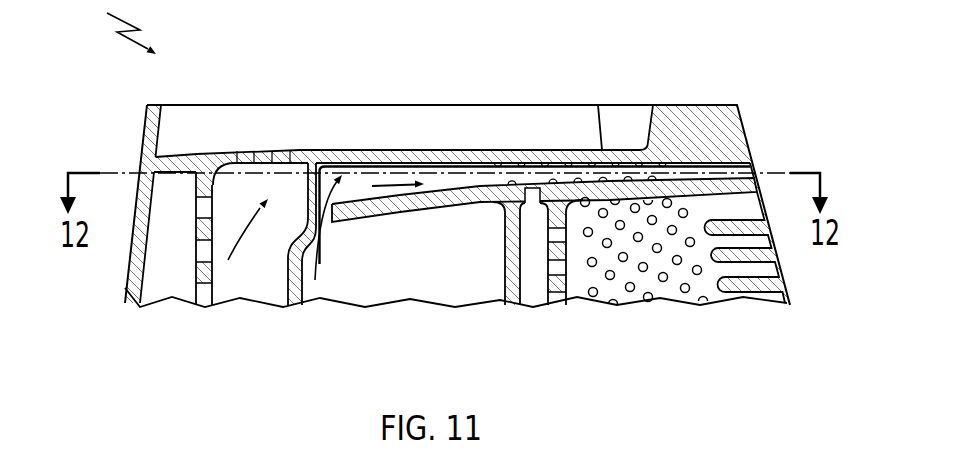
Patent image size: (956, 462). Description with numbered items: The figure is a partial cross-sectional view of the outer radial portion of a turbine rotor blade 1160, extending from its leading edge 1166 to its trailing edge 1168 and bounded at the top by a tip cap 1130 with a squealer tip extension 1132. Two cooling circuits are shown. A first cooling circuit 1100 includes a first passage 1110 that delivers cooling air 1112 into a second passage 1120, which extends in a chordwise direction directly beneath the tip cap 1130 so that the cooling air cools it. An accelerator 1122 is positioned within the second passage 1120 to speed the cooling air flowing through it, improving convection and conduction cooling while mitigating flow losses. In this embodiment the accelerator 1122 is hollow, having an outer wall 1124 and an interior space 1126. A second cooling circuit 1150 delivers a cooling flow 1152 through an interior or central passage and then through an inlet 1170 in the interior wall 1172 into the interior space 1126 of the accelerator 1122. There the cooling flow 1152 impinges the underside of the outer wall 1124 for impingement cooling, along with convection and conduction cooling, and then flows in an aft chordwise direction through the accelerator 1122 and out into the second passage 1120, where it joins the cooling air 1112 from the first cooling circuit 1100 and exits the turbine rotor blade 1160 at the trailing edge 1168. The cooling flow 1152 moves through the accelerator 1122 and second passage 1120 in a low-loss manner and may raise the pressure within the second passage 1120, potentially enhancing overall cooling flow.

The cooling circuit 1100 is at (210, 277).
The first passage 1110 is at (214, 304).
The cooling air 1112 is at (252, 244).
The second passage 1120 is at (282, 186).
The accelerator 1122 is at (383, 163).
The outer wall 1124 is at (306, 187).
The interior space 1126 is at (447, 186).
The tip cap 1130 is at (598, 105).
The squealer tip extension 1132 is at (144, 132).
The second cooling circuit 1150 is at (312, 300).
The cooling flow 1152 is at (318, 265).
The turbine rotor blade 1160 is at (103, 27).
The leading edge 1166 is at (123, 283).
The trailing edge 1168 is at (771, 253).
The inlet 1170 is at (320, 229).
The interior wall 1172 is at (452, 206).